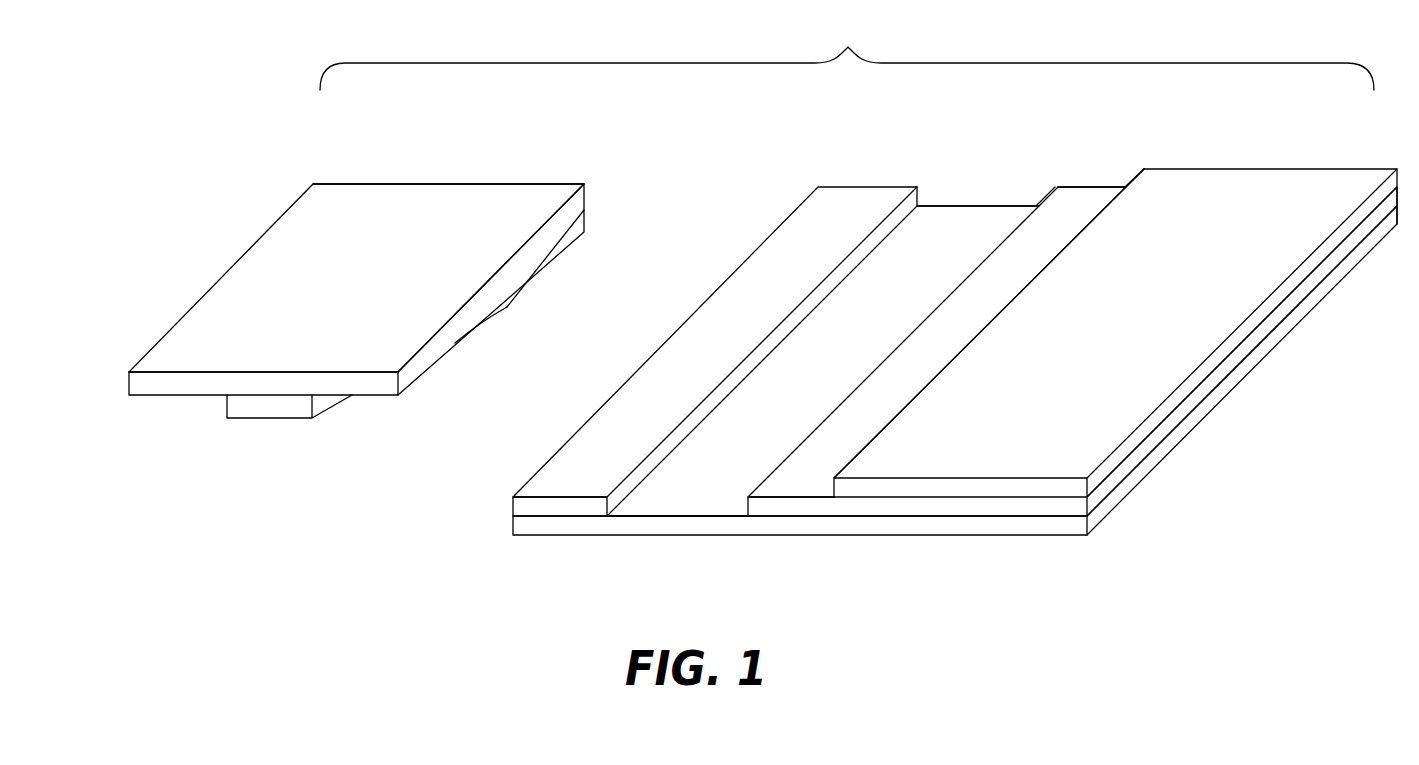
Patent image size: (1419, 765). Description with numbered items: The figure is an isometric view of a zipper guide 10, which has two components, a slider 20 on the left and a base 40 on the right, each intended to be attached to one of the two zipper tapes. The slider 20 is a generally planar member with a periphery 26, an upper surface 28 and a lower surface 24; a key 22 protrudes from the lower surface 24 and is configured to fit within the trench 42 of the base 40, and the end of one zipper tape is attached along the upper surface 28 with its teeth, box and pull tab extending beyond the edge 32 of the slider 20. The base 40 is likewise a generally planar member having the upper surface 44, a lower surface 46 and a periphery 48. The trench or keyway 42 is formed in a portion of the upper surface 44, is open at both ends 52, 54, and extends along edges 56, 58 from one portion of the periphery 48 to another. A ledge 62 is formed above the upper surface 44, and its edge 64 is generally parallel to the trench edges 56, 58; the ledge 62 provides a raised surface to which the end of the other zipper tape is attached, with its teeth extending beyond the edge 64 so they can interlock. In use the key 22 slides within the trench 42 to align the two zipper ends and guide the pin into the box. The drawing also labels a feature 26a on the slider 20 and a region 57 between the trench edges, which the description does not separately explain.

The zipper guide 10 is at (847, 50).
The slider 20 is at (345, 307).
The key 22 is at (250, 407).
The lower surface 24 is at (168, 398).
The periphery 26 is at (195, 300).
The top surface of upper layer 26a is at (447, 183).
The upper surface 28 is at (323, 316).
The edge 32 is at (412, 368).
The base 40 is at (955, 356).
The trench 42 is at (927, 236).
The upper surface 44 is at (828, 323).
The lower surface 46 is at (793, 537).
The periphery 48 is at (733, 272).
The end 52 is at (678, 497).
The end 54 is at (987, 227).
The edge 56 is at (828, 295).
The groove floor 57 is at (771, 431).
The edge 58 is at (878, 362).
The ledge 62 is at (1197, 188).
The edge 64 is at (1018, 292).